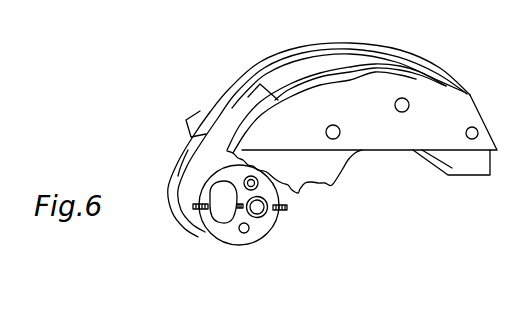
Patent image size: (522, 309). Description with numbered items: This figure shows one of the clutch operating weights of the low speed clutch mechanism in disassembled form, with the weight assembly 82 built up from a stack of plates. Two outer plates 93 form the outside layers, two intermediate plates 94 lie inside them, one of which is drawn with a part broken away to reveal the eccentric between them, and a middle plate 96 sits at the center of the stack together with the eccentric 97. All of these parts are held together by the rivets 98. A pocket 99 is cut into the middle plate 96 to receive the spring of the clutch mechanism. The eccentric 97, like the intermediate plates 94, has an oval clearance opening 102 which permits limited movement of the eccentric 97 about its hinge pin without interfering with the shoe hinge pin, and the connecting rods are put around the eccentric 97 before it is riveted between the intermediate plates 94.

The supporting plate 82 is at (138, 157).
The outer plate 93 is at (335, 82).
The intermediate plate 94 is at (305, 83).
The middle plate 96 is at (293, 73).
The eccentric 97 is at (197, 153).
The rivet 98 is at (336, 126).
The pocket 99 is at (255, 100).
The oval clearance opening 102 is at (220, 212).